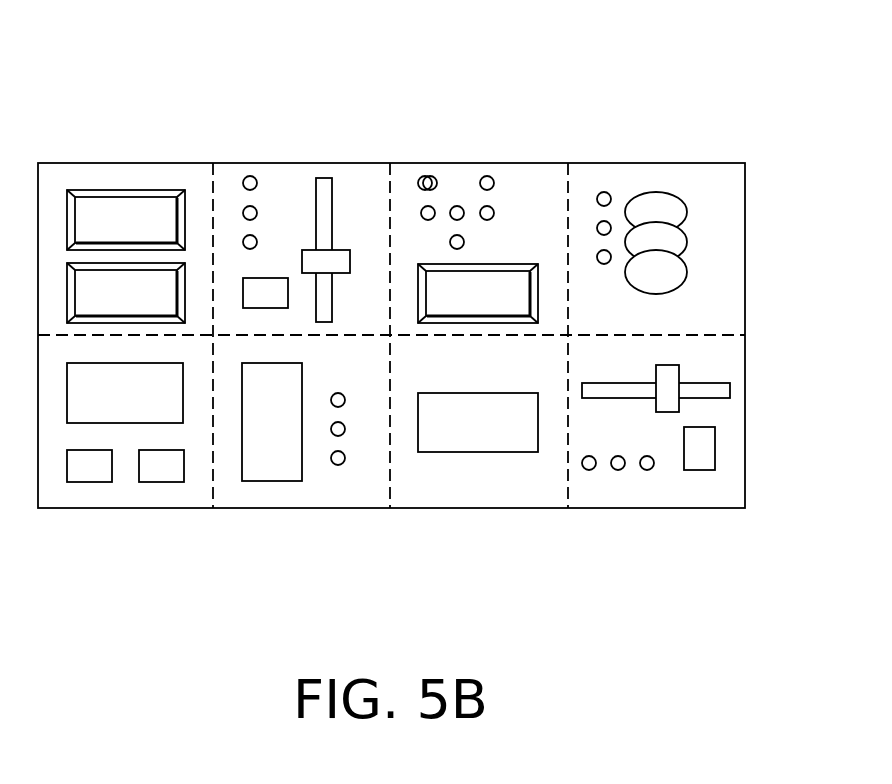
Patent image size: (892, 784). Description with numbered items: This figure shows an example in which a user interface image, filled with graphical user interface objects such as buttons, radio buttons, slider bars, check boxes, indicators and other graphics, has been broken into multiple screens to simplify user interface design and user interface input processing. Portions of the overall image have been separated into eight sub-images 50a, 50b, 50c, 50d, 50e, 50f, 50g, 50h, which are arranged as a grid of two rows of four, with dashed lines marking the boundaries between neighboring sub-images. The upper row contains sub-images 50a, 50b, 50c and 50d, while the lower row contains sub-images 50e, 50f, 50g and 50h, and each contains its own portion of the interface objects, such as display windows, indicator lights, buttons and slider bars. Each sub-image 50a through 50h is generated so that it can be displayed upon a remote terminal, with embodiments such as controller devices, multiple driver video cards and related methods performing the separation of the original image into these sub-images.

The sub-image 50a is at (132, 170).
The sub-image 50b is at (290, 170).
The sub-image 50c is at (472, 170).
The sub-image 50d is at (648, 170).
The sub-image 50e is at (132, 501).
The sub-image 50f is at (287, 501).
The sub-image 50g is at (470, 501).
The sub-image 50h is at (647, 501).